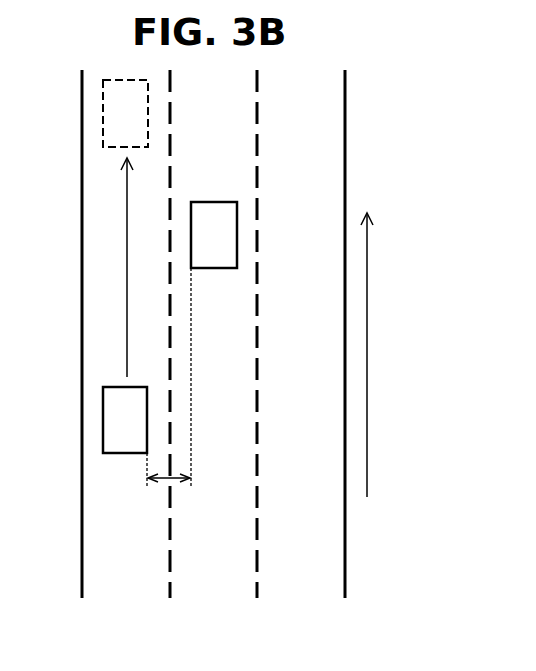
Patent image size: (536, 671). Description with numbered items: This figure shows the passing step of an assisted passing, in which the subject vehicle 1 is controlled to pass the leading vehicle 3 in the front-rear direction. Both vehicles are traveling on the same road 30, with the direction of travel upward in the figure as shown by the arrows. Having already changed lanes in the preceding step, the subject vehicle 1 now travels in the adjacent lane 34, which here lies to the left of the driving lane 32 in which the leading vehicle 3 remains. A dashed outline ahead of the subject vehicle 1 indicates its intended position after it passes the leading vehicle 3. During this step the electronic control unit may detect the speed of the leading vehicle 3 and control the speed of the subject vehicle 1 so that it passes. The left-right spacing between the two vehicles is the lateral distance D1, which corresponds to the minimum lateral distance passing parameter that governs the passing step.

The subject vehicle 1 is at (103, 425).
The leading vehicle 3 is at (237, 233).
The road 30 is at (345, 113).
The driving lane 32 is at (220, 585).
The adjacent lane 34 is at (120, 585).
The lateral distance D1 is at (165, 392).